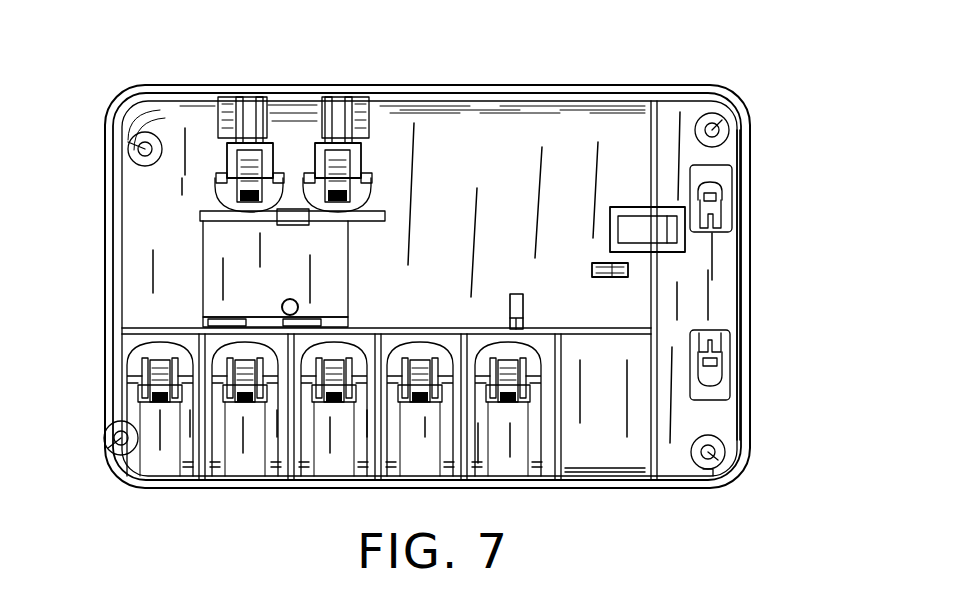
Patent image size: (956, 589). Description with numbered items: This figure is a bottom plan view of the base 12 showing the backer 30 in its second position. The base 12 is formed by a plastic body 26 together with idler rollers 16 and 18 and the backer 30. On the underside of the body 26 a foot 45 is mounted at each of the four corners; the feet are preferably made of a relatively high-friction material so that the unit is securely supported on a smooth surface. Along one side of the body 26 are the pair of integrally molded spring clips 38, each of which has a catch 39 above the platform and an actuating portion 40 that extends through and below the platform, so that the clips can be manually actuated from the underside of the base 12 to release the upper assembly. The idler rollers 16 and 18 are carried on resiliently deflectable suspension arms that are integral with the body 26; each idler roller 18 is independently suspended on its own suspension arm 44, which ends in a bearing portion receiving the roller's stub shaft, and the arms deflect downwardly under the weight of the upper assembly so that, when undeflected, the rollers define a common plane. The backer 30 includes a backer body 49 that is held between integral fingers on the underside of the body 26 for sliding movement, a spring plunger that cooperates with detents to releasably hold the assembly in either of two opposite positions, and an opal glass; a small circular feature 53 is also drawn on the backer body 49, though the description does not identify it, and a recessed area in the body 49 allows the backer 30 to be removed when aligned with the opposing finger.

The base 12 is at (146, 52).
The idler roller 16 is at (157, 373).
The idler roller 18 is at (345, 178).
The body 26 is at (758, 296).
The backer 30 is at (360, 306).
The spring clip 38 is at (730, 238).
The catch 39 is at (708, 181).
The actuating portion 40 is at (157, 462).
The suspension arm 44 is at (248, 110).
The foot 45 is at (134, 142).
The backer body 49 is at (330, 257).
The aperture 53 is at (290, 298).